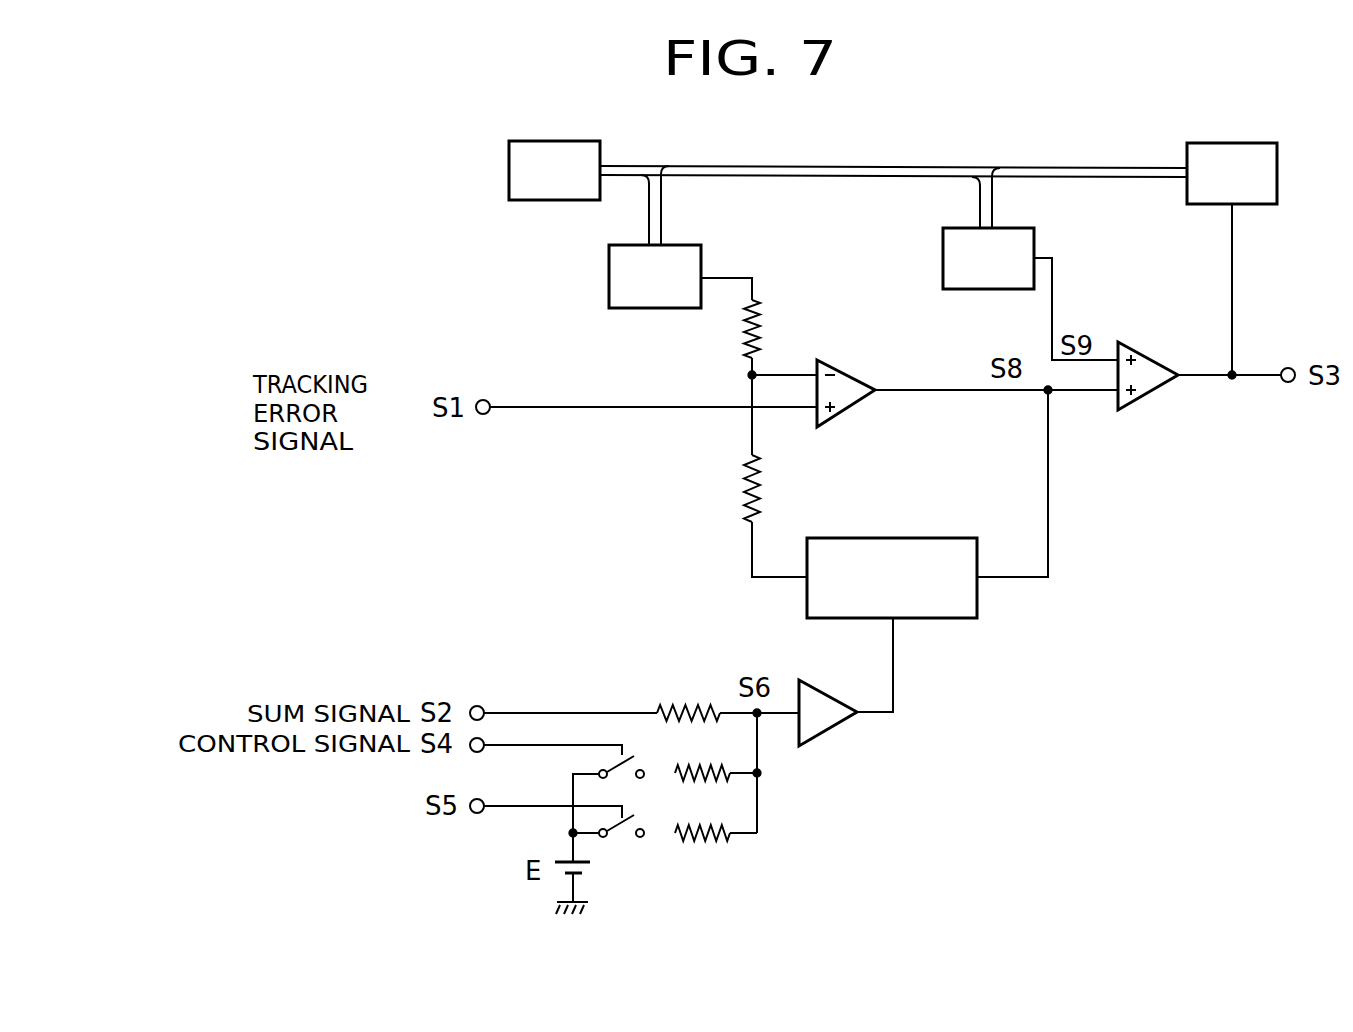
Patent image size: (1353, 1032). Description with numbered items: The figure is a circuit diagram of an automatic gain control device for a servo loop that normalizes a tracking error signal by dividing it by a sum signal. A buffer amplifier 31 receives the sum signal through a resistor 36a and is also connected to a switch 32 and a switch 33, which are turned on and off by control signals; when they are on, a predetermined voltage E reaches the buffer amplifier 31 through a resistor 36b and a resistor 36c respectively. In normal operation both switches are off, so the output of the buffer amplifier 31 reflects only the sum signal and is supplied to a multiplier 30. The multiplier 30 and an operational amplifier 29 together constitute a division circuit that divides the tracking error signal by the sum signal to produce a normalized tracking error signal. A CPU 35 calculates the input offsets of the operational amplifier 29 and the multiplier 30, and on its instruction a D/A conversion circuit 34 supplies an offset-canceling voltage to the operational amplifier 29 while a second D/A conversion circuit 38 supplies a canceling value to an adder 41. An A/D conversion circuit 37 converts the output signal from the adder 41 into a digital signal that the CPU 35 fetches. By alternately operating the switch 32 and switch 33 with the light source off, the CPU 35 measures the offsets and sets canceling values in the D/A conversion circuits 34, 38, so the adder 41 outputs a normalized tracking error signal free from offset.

The CPU 35 is at (527, 200).
The D/A conversion circuit 34 is at (700, 246).
The D/A conversion circuit 38 is at (1036, 232).
The A/D conversion circuit 37 is at (1255, 204).
The operational amplifier 29 is at (840, 368).
The adder 41 is at (1152, 360).
The multiplier 30 is at (910, 538).
The buffer amplifier 31 is at (832, 692).
The resistor 36a is at (688, 704).
The resistor 36b is at (711, 779).
The resistor 36c is at (724, 840).
The switch 32 is at (615, 760).
The switch 33 is at (620, 836).